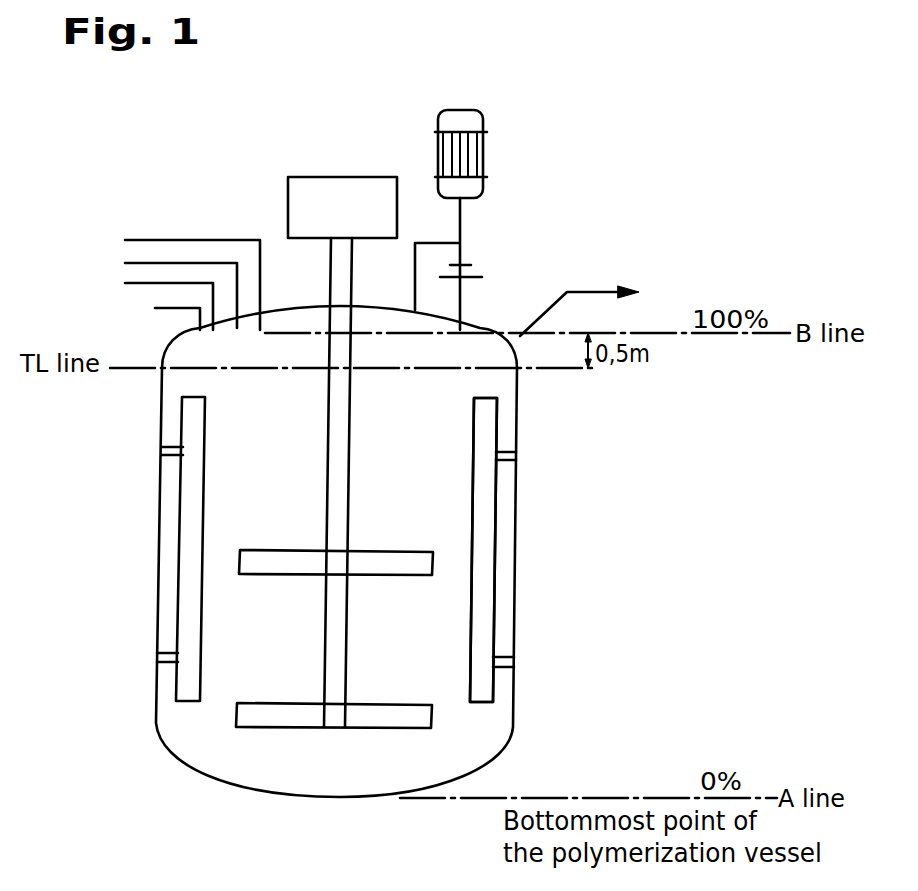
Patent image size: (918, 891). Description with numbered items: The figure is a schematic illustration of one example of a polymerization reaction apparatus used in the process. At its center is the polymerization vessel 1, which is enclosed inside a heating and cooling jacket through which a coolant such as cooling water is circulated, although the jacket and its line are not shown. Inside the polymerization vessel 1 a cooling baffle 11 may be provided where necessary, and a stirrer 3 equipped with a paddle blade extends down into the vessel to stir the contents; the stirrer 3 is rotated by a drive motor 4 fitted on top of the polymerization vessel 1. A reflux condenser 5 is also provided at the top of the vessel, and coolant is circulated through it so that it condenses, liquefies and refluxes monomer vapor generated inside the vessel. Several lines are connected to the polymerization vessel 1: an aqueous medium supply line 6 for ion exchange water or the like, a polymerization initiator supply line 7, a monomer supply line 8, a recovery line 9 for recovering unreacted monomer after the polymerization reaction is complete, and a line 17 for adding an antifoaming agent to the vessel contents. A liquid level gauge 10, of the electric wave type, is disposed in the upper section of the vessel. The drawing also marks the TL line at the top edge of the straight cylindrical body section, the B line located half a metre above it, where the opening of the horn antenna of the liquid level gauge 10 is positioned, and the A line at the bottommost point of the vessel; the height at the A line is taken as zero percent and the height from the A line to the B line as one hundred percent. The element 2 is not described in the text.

The polymerization vessel 1 is at (515, 562).
The baffle plate 2 is at (480, 628).
The stirrer 3 is at (333, 468).
The drive motor 4 is at (360, 177).
The reflux condenser 5 is at (485, 160).
The aqueous medium supply line 6 is at (177, 240).
The polymerization initiator supply line 7 is at (135, 263).
The monomer supply line 8 is at (157, 291).
The recovery line 9 is at (593, 292).
The liquid level gauge 10 is at (462, 263).
The cooling baffle 11 is at (196, 418).
The line for adding an antifoaming agent 17 is at (182, 317).